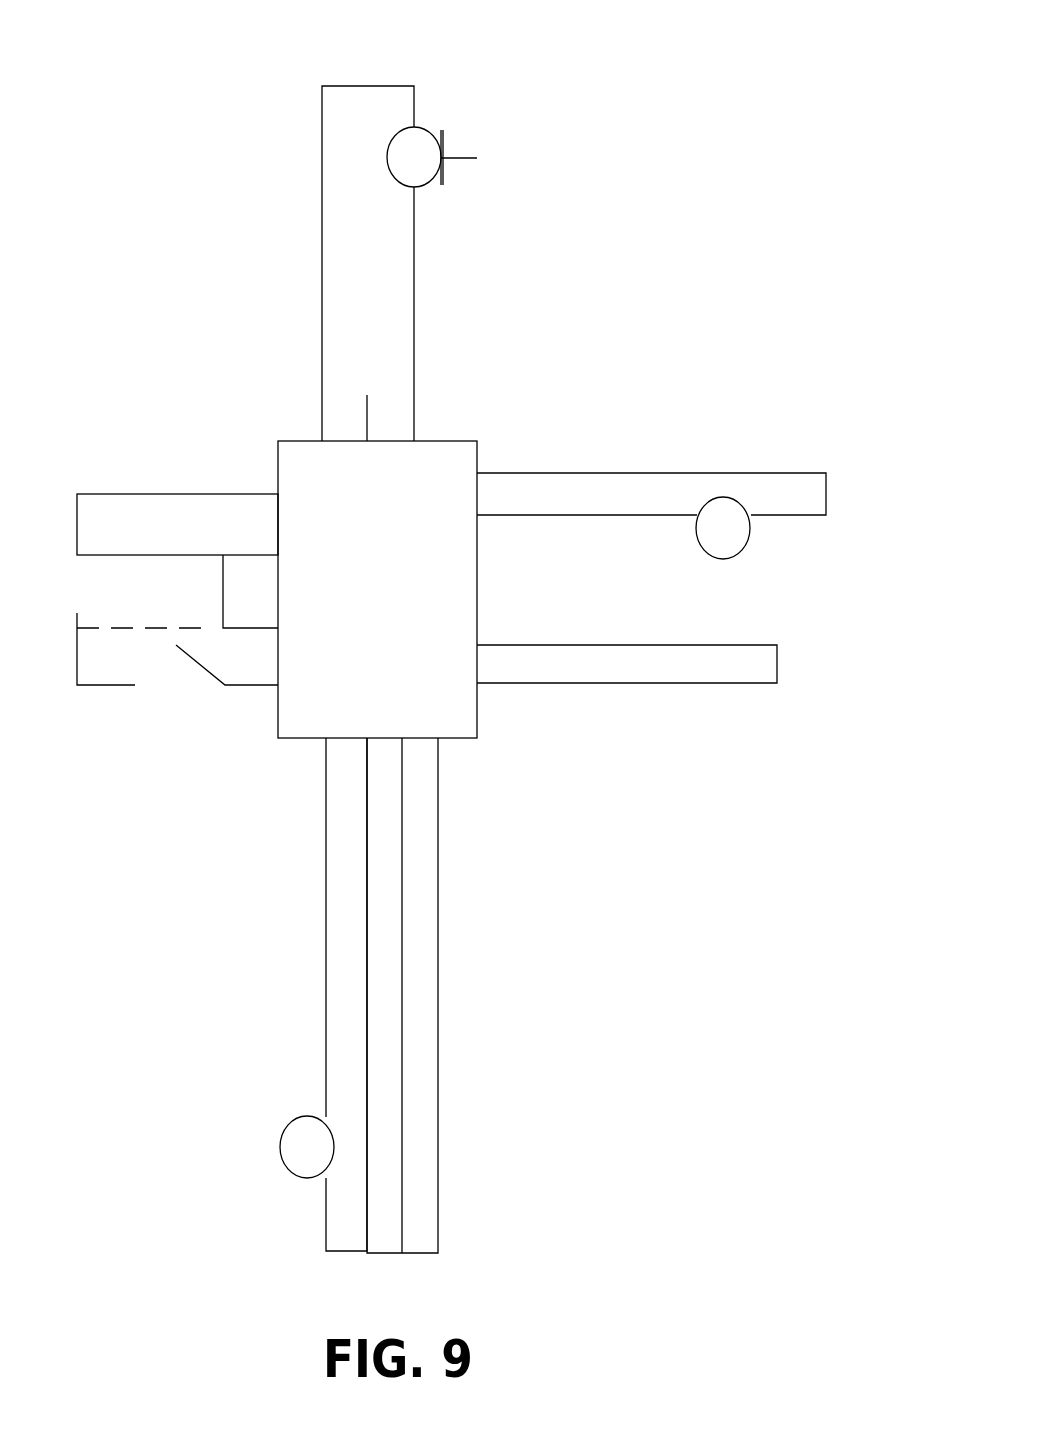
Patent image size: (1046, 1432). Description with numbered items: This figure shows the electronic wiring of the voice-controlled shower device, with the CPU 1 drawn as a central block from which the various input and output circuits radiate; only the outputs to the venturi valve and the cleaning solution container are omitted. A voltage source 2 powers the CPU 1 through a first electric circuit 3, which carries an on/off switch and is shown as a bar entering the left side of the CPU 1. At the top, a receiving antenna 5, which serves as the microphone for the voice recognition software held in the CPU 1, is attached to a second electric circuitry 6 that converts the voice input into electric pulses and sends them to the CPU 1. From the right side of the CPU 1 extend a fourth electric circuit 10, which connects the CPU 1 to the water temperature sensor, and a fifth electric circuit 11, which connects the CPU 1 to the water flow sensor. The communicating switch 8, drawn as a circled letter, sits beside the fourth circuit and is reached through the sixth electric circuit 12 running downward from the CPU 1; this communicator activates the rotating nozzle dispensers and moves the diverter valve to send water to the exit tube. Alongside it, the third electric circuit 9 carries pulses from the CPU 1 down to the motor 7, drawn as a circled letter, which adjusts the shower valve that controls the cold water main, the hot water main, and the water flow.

The CPU 1 is at (255, 418).
The voltage source 2 is at (57, 535).
The first electric circuit 3 is at (147, 460).
The receiving antenna 5 is at (450, 106).
The second electric circuitry 6 is at (286, 136).
The motor for adjusting shower valve 7 is at (268, 1110).
The communicating switch 8 is at (770, 552).
The third electric circuit 9 is at (292, 908).
The fourth electric circuit 10 is at (667, 442).
The fifth electric circuit 11 is at (800, 720).
The sixth electric circuit 12 is at (480, 1102).